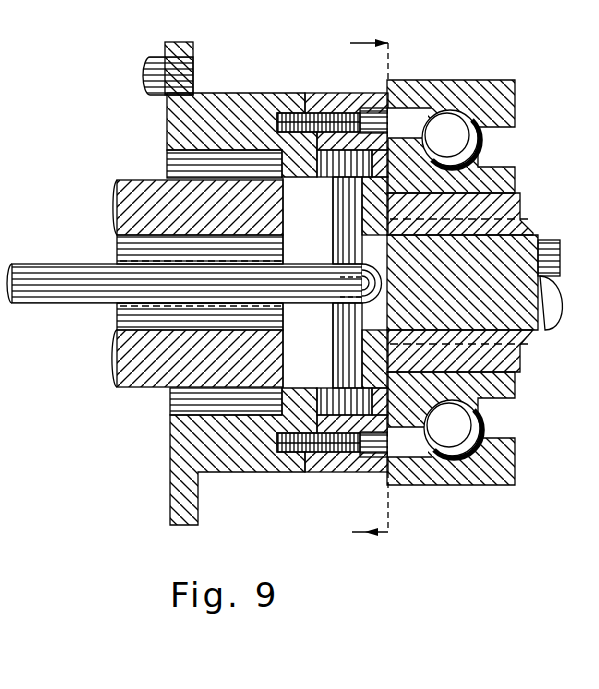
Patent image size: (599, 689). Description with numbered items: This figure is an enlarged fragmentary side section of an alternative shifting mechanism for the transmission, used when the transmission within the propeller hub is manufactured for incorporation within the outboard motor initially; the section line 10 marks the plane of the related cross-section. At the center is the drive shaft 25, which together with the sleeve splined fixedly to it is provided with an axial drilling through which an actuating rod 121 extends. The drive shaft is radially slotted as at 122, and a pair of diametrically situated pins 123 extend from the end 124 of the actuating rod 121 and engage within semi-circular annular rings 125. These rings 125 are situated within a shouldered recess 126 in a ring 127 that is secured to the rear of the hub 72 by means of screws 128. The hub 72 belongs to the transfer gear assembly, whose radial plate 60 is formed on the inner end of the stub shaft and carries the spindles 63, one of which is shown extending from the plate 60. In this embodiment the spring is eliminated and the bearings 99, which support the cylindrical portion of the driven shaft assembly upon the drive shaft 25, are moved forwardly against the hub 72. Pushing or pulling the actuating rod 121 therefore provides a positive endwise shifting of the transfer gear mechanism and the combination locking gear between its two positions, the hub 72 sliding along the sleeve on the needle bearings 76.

The section line 10- 10 is at (369, 294).
The drive shaft 25 is at (120, 317).
The radial plate 60 is at (194, 50).
The spindle 63 is at (146, 74).
The hub 72 is at (252, 103).
The needle bearings 76 is at (170, 165).
The bearings 99 is at (478, 146).
The actuating rod 121 is at (40, 303).
The radial slot 122 is at (309, 282).
The pins 123 is at (340, 233).
The end of actuating rod 124 is at (358, 286).
The semi-circular annular rings 125 is at (302, 122).
The shouldered recess 126 is at (338, 112).
The ring 127 is at (344, 462).
The screws 128 is at (300, 452).